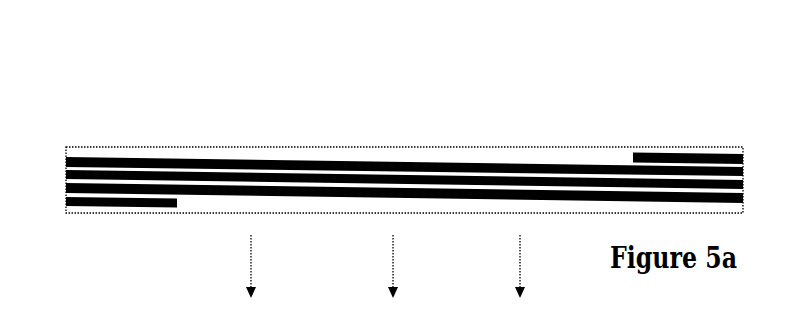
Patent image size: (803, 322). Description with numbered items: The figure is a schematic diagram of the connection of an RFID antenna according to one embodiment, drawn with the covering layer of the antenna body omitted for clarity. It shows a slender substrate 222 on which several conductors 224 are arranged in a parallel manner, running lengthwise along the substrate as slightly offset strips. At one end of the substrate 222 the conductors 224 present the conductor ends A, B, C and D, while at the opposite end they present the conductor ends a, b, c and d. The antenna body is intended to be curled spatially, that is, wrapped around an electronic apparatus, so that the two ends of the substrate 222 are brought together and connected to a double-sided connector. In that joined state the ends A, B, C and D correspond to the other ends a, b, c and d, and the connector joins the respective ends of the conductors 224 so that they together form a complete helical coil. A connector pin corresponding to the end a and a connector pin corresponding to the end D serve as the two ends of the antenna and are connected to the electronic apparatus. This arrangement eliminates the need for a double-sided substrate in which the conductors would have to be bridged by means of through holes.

The substrate 222 is at (541, 151).
The conductors 224 is at (404, 129).
The conductor end A is at (398, 165).
The conductor end B is at (398, 178).
The conductor end C is at (398, 192).
The conductor end D is at (114, 202).
The conductor end a is at (695, 159).
The conductor end b is at (754, 171).
The conductor end c is at (754, 184).
The conductor end d is at (754, 198).